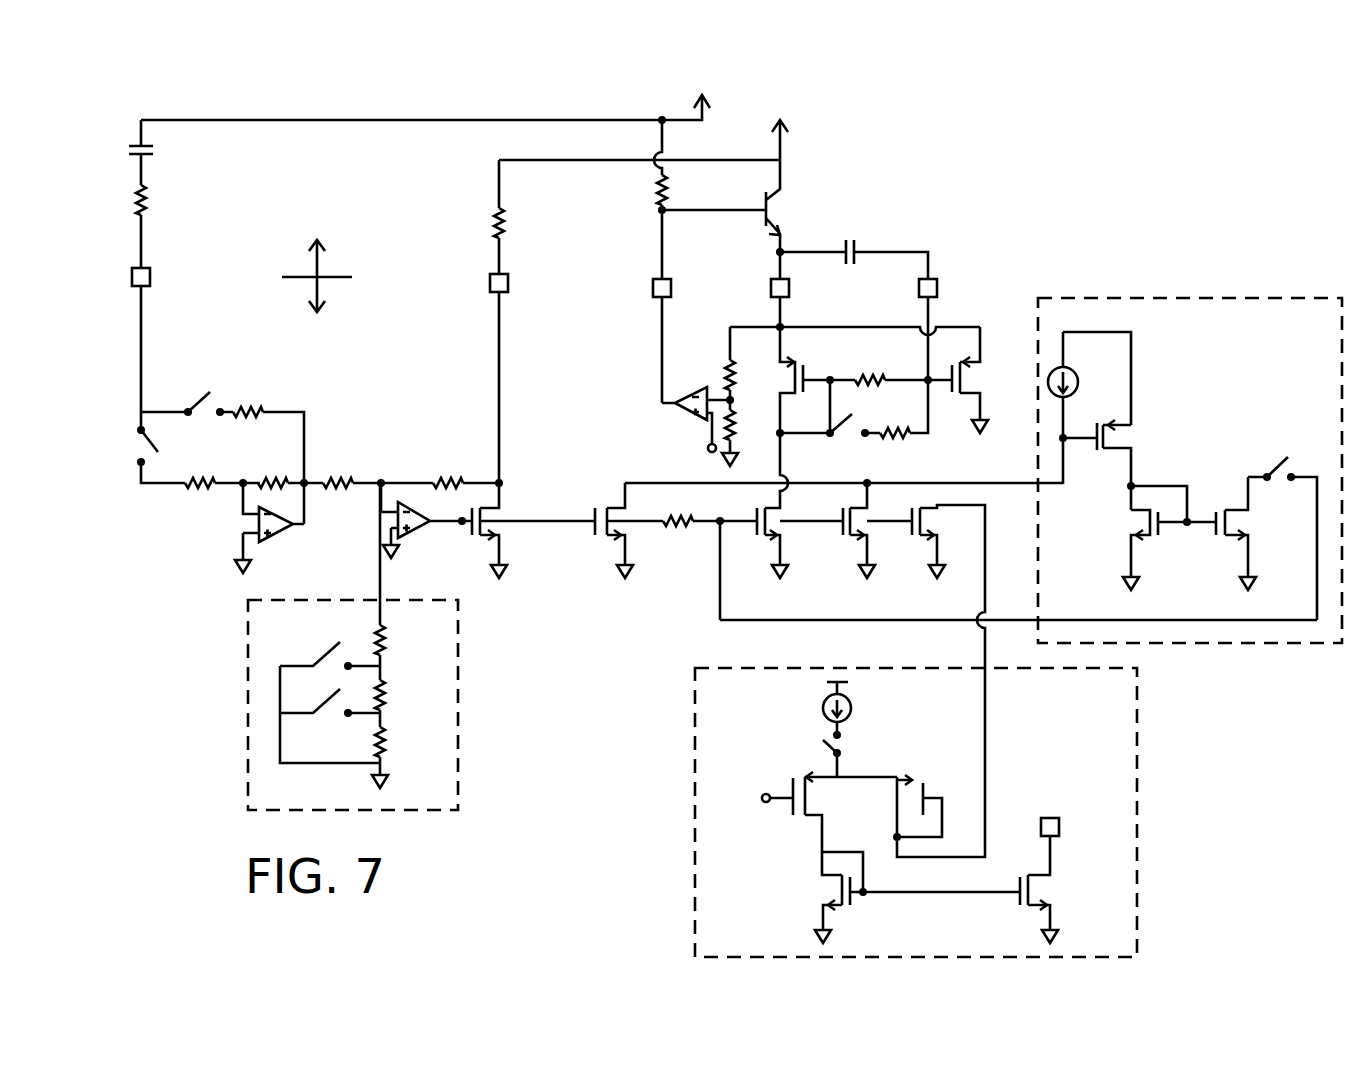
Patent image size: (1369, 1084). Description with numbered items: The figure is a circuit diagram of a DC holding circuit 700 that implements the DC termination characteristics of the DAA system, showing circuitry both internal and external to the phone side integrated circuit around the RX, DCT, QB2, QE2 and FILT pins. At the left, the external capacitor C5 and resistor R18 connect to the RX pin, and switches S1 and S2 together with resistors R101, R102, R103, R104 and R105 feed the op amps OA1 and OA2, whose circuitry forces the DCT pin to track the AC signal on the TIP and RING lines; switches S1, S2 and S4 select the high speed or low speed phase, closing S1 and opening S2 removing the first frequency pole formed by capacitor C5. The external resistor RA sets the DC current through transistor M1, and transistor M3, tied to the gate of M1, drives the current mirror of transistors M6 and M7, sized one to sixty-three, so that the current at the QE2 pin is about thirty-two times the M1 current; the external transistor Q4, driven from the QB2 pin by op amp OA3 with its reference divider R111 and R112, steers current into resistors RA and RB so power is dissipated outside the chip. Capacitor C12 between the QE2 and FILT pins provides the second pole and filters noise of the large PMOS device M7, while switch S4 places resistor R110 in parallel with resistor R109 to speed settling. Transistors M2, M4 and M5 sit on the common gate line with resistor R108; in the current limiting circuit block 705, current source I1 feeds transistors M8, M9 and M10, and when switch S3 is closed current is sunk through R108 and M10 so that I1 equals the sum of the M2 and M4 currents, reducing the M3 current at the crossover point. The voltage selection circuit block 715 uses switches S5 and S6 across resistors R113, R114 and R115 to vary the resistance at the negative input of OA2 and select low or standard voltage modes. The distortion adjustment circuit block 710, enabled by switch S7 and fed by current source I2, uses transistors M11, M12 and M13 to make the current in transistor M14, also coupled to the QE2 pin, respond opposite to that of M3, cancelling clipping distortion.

The DC holding circuit 700 is at (995, 182).
The current limiting circuit block 705 is at (1226, 298).
The distortion adjustment circuit block 710 is at (1136, 733).
The voltage selection circuit block 715 is at (458, 733).
The capacitor C5 is at (160, 152).
The resistor R18 is at (170, 226).
The RX pin RX is at (161, 348).
The switch S1 is at (187, 389).
The switch S2 is at (144, 454).
The resistor R101 is at (210, 500).
The resistor R102 is at (268, 451).
The resistor R103 is at (276, 468).
The resistor R104 is at (372, 468).
The resistor R105 is at (465, 468).
The op amp OA1 is at (277, 528).
The op amp OA2 is at (426, 525).
The op amp OA3 is at (675, 426).
The resistor RA is at (477, 217).
The DCT pin DCT is at (527, 377).
The resistor RB is at (637, 199).
The QB2 pin QB2 is at (691, 339).
The external transistor Q4 is at (742, 186).
The capacitor C12 is at (852, 250).
The QE2 pin QE2 is at (808, 289).
The FILT pin FILT is at (953, 327).
The resistor R111 is at (703, 368).
The resistor R112 is at (763, 435).
The current mirror transistor M6 is at (786, 382).
The resistor R109 is at (889, 364).
The switch S4 is at (824, 424).
The resistor R110 is at (902, 424).
The current mirror transistor M7 is at (989, 380).
The transistor M1 is at (533, 530).
The transistor M2 is at (630, 530).
The resistor R108 is at (710, 554).
The transistor M3 is at (800, 505).
The transistor M4 is at (883, 528).
The transistor M5 is at (941, 680).
The DC current source I1 is at (1089, 408).
The transistor M8 is at (1127, 468).
The transistor M9 is at (1135, 549).
The transistor M10 is at (1245, 533).
The switch S3 is at (1282, 538).
The resistor R113 is at (413, 581).
The resistor R114 is at (413, 702).
The resistor R115 is at (411, 757).
The switch S5 is at (330, 689).
The switch S6 is at (330, 719).
The current source I2 is at (850, 708).
The switch S7 is at (851, 754).
The transistor M11 is at (806, 823).
The transistor M12 is at (899, 808).
The transistor M13 is at (895, 897).
The transistor M14 is at (1062, 864).